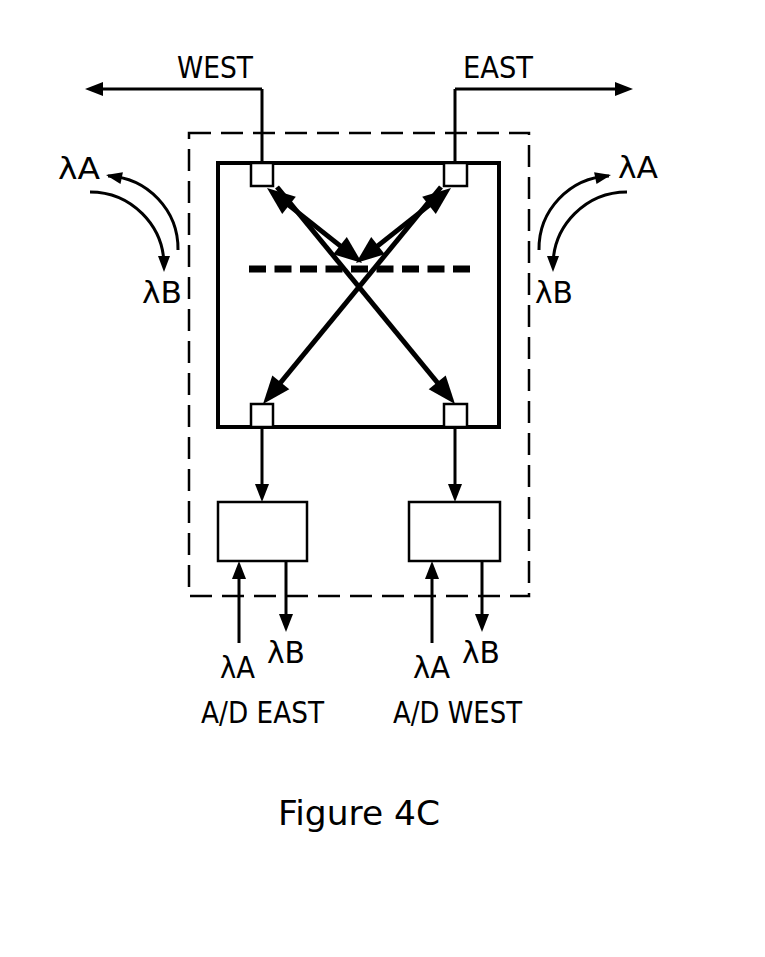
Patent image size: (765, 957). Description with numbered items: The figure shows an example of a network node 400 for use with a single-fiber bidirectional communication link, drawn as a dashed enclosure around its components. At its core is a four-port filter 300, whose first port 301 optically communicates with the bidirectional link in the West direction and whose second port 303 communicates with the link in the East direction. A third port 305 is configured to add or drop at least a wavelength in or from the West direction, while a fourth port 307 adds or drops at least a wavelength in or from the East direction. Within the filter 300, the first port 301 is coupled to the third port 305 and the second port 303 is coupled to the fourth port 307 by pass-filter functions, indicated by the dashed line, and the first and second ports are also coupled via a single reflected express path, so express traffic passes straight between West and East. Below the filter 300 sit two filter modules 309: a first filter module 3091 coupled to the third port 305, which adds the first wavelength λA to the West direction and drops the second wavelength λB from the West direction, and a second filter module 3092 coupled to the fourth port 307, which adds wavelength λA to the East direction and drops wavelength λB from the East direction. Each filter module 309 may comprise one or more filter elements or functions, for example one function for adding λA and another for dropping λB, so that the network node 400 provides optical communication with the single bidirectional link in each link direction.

The filter 300 is at (500, 352).
The first port 301 is at (264, 162).
The second port 303 is at (447, 162).
The third port 305 is at (467, 405).
The fourth port 307 is at (251, 404).
The filter module 309 is at (360, 505).
The first filter module 3091 is at (470, 502).
The second filter module 3092 is at (249, 502).
The network node 400 is at (188, 357).